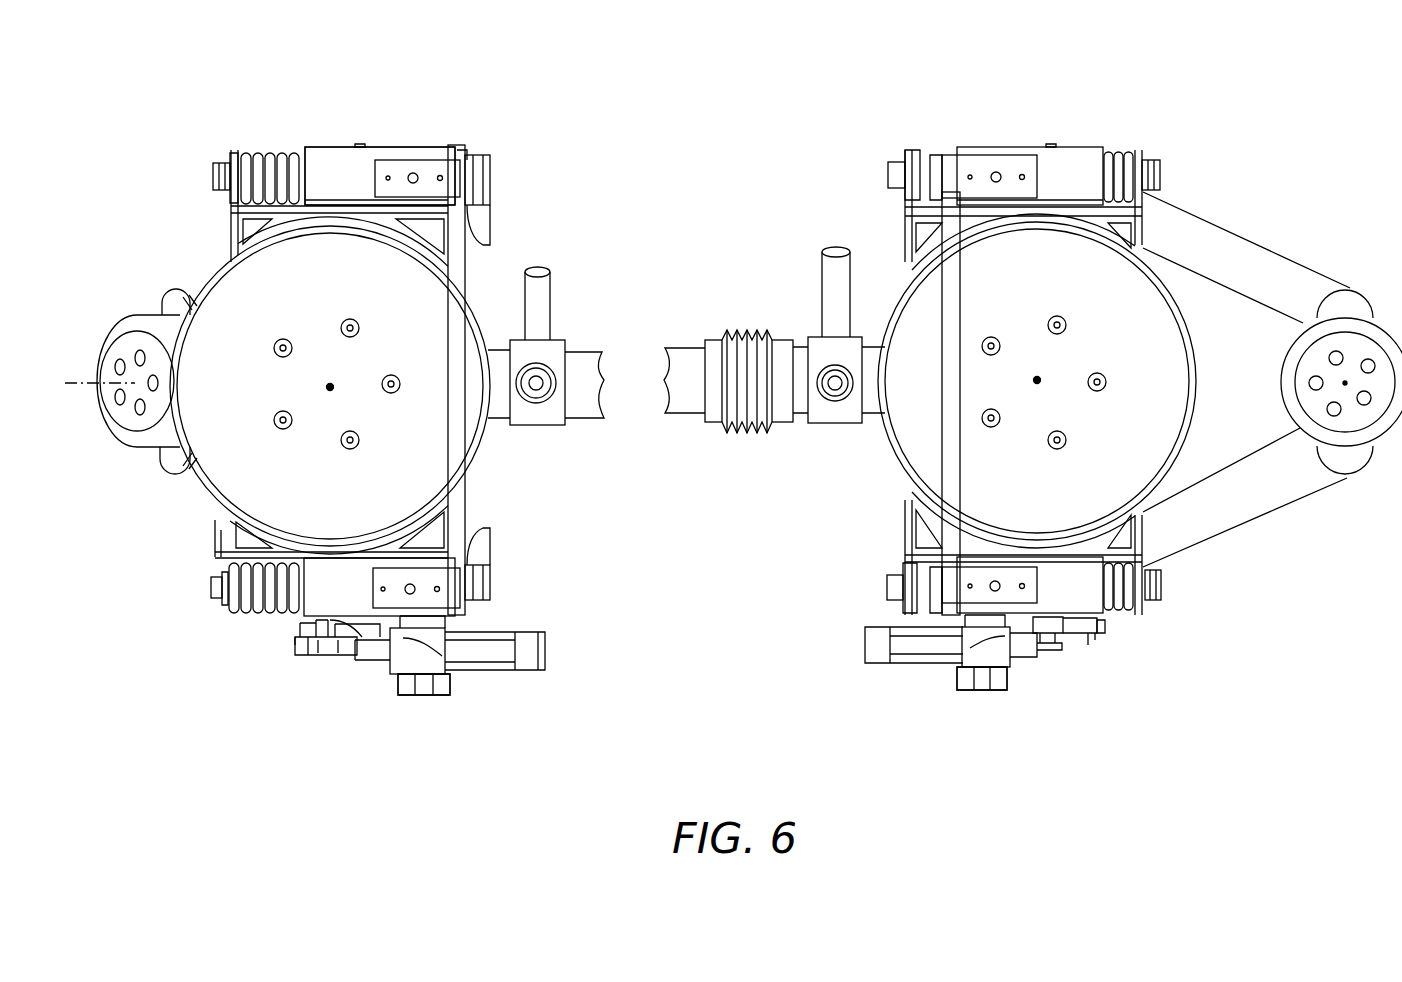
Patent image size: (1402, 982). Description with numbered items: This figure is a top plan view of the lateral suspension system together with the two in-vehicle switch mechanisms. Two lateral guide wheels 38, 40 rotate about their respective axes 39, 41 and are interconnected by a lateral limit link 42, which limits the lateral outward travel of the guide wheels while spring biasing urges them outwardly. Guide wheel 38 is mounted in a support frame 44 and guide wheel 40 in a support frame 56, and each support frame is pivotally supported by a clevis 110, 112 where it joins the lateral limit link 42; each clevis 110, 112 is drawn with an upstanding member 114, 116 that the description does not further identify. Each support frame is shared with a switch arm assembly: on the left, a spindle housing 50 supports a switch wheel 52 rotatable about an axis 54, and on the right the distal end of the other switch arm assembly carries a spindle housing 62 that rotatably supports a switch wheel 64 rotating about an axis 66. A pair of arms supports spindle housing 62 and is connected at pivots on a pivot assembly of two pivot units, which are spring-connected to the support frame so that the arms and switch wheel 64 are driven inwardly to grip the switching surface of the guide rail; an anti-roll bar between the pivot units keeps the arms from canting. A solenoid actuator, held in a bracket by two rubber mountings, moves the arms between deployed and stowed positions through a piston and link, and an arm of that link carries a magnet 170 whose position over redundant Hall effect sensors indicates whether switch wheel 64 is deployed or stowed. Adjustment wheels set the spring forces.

The lateral guide wheel 38 is at (300, 510).
The axis 39 is at (326, 388).
The lateral guide wheel 40 is at (1138, 434).
The axis 41 is at (1044, 378).
The lateral limit link 42 is at (683, 347).
The support frame 44 is at (561, 366).
The spindle housing 50 is at (170, 464).
The switch wheel 52 is at (128, 434).
The axis 54 is at (72, 383).
The support frame 56 is at (774, 369).
The spindle housing 62 is at (1352, 472).
The switch wheel 64 is at (1283, 400).
The axis 66 is at (1343, 382).
The clevis 110 is at (548, 340).
The clevis 112 is at (821, 338).
The valve stem pipe 114 is at (541, 286).
The valve stem pipe 116 is at (836, 280).
The magnet 170 is at (1101, 630).